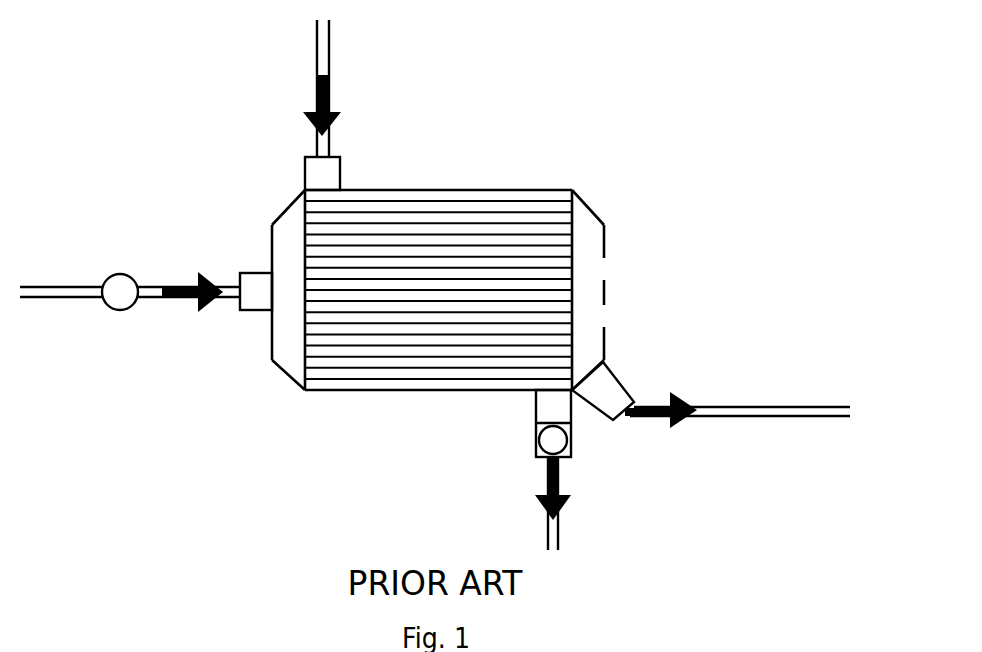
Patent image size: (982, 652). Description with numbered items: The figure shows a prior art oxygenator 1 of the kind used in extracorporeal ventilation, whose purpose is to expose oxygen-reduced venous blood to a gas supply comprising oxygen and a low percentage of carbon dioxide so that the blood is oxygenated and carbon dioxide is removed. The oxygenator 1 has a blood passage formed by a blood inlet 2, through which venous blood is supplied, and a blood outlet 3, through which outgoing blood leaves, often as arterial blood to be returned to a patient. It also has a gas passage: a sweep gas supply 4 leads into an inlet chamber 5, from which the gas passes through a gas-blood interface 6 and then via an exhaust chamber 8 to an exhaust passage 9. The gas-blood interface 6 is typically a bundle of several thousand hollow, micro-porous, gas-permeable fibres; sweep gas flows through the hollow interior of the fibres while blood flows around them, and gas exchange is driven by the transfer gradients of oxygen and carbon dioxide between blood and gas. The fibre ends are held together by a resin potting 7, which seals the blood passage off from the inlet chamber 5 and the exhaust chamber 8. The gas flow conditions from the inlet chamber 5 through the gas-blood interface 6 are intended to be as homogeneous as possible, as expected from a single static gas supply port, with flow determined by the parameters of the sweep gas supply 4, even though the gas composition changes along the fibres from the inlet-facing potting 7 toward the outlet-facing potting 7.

The oxygenator 1 is at (490, 103).
The blood inlet 2 is at (318, 82).
The blood outlet 3 is at (545, 525).
The sweep gas supply 4 is at (185, 300).
The inlet chamber 5 is at (285, 218).
The gas-blood interface 6 is at (474, 237).
The potting 7 is at (563, 188).
The exhaust chamber 8 is at (590, 247).
The exhaust passage 9 is at (727, 413).